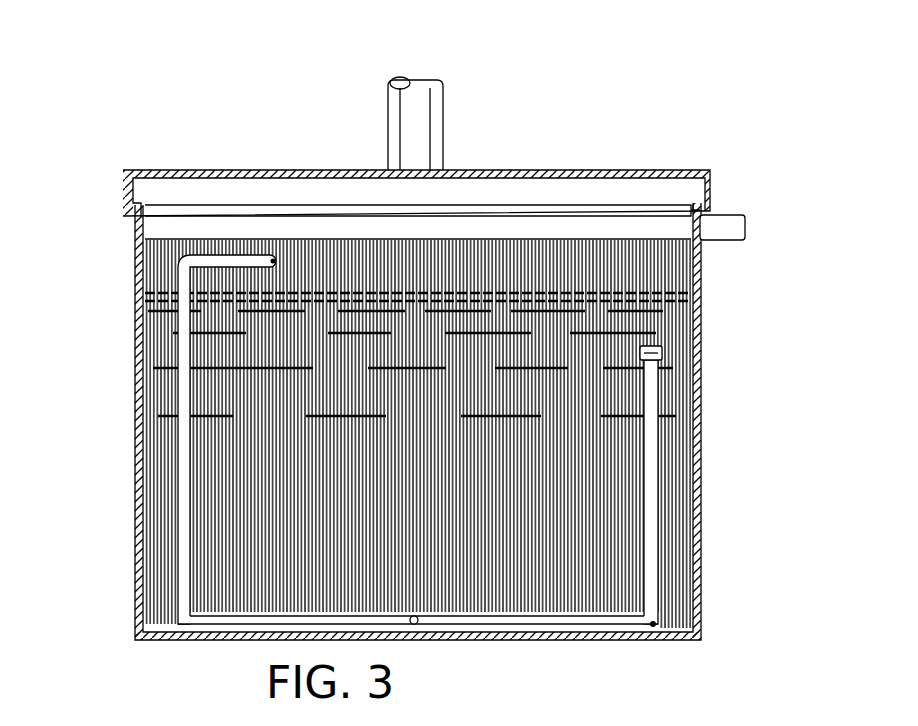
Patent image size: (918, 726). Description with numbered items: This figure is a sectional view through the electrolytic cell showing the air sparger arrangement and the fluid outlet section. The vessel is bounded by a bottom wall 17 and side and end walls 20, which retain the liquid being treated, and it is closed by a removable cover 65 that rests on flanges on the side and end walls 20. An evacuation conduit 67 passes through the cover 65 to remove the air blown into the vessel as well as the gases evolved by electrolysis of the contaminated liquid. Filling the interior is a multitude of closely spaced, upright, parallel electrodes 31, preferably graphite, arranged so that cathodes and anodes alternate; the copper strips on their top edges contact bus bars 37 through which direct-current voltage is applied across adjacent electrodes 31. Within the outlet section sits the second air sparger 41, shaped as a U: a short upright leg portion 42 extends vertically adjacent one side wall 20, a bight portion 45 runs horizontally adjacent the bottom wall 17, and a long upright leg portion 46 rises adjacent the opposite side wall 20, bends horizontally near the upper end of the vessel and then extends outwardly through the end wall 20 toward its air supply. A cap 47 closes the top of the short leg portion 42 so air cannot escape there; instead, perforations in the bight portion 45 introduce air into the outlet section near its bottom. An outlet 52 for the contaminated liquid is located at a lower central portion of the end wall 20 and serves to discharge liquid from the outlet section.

The bottom wall 17 is at (573, 627).
The side and end walls 20 is at (692, 438).
The electrodes 31 is at (628, 298).
The bus bars 37 is at (672, 220).
The second air sparger 41 is at (648, 623).
The short upright leg portion 42 is at (643, 503).
The bight portion 45 is at (520, 607).
The long upright leg portion 46 is at (173, 385).
The cap 47 is at (653, 346).
The outlet 52 is at (415, 610).
The removable cover 65 is at (630, 163).
The evacuation conduit 67 is at (430, 107).